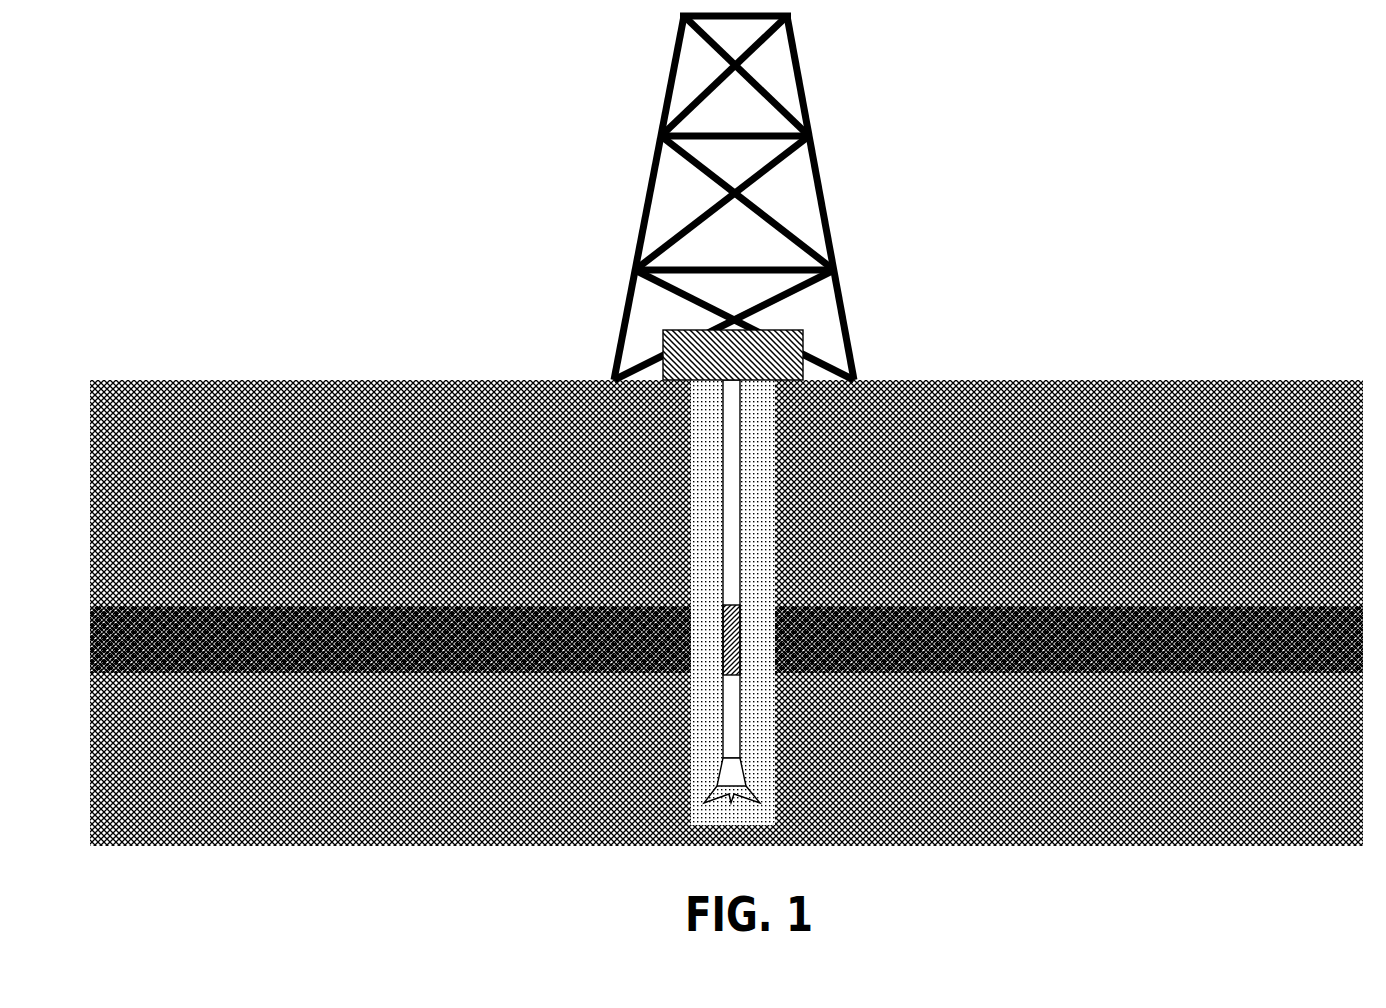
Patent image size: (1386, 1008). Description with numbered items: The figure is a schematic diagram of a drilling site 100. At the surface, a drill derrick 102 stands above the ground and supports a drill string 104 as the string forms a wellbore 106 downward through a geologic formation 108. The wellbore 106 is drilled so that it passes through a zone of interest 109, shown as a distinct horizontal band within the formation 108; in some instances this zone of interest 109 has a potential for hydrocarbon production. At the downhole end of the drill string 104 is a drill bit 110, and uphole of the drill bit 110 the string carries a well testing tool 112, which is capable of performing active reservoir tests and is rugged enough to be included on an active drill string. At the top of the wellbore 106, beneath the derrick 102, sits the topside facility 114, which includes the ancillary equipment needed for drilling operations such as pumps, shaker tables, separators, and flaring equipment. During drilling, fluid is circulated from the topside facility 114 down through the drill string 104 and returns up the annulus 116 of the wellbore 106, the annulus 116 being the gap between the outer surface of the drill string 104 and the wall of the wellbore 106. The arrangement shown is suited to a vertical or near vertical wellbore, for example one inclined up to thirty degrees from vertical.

The drilling site 100 is at (372, 313).
The drill derrick 102 is at (620, 87).
The drill string 104 is at (714, 684).
The wellbore 106 is at (720, 602).
The geologic formation 108 is at (259, 527).
The zone of interest 109 is at (262, 644).
The drill bit 110 is at (740, 776).
The well testing tool 112 is at (733, 632).
The topside facility 114 is at (795, 340).
The annulus 116 is at (748, 520).